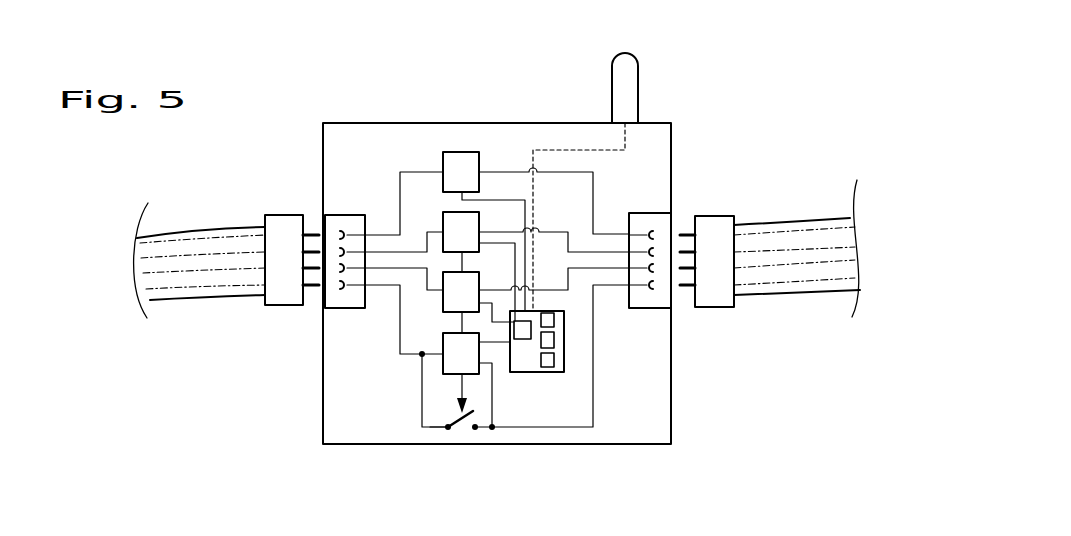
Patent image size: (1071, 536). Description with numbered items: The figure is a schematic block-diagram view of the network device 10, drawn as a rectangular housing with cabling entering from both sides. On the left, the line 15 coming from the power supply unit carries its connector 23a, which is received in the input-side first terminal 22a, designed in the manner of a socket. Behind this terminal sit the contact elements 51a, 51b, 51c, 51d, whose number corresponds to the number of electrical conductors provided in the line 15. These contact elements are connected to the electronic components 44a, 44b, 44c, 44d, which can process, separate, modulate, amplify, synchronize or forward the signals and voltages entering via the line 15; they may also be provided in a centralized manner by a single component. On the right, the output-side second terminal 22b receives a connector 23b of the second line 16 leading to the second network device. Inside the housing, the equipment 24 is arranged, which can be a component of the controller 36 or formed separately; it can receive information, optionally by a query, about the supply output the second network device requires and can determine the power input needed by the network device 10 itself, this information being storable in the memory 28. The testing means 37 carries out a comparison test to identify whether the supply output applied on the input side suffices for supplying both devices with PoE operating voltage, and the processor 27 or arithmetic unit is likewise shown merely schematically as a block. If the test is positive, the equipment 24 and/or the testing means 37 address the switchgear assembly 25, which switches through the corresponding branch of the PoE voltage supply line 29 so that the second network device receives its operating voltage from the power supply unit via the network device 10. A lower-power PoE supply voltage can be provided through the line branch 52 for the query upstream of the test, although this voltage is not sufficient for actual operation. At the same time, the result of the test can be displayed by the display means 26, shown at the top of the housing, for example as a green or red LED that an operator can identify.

The network device 10 is at (764, 101).
The line 15 is at (178, 245).
The second line 16 is at (818, 240).
The first terminal 22a is at (318, 210).
The second terminal 22b is at (686, 316).
The connector 23a is at (290, 247).
The second cable plug 23b is at (722, 247).
The equipment 24 is at (538, 372).
The switchgear assembly 25 is at (462, 420).
The display means 26 is at (623, 95).
The processor 27 is at (548, 342).
The memory 28 is at (522, 342).
The PoE voltage supply line 29 is at (430, 428).
The controller 36 is at (552, 367).
The testing means 37 is at (557, 323).
The electronic component 44a is at (458, 173).
The electronic component 44b is at (467, 230).
The electronic component 44c is at (465, 292).
The electronic component 44d is at (458, 352).
The contact element 51a is at (341, 288).
The contact element 51b is at (341, 271).
The contact element 51c is at (341, 255).
The contact element 51d is at (341, 238).
The line branch 52 is at (493, 397).